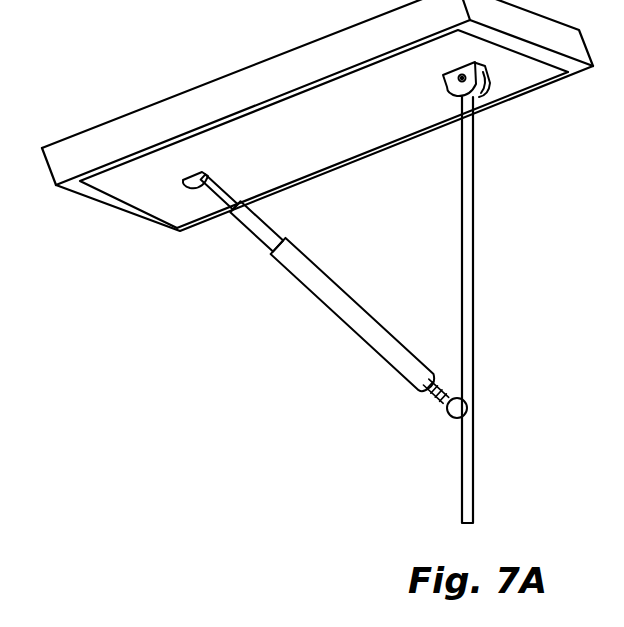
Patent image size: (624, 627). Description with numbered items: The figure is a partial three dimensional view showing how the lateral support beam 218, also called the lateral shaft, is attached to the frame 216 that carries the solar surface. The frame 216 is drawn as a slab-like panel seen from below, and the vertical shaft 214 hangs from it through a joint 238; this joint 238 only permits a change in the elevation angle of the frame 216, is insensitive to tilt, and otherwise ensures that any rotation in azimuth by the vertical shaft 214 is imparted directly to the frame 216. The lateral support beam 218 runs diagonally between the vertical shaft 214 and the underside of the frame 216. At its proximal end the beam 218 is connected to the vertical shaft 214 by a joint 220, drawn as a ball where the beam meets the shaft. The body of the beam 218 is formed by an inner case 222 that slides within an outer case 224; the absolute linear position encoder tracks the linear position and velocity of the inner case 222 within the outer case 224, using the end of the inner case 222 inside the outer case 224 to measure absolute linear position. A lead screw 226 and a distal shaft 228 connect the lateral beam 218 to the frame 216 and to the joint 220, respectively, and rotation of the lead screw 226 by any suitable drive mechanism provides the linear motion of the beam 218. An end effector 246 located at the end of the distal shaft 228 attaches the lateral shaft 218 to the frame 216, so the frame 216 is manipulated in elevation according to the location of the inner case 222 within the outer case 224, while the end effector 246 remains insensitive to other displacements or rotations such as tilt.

The vertical shaft 214 is at (477, 197).
The frame 216 is at (88, 197).
The lateral support beam 218 is at (226, 412).
The joint 220 is at (448, 415).
The inner case 222 is at (262, 248).
The outer case 224 is at (341, 324).
The lead screw 226 is at (432, 395).
The distal shaft 228 is at (213, 202).
The joint 238 is at (497, 83).
The end effector 246 is at (205, 173).